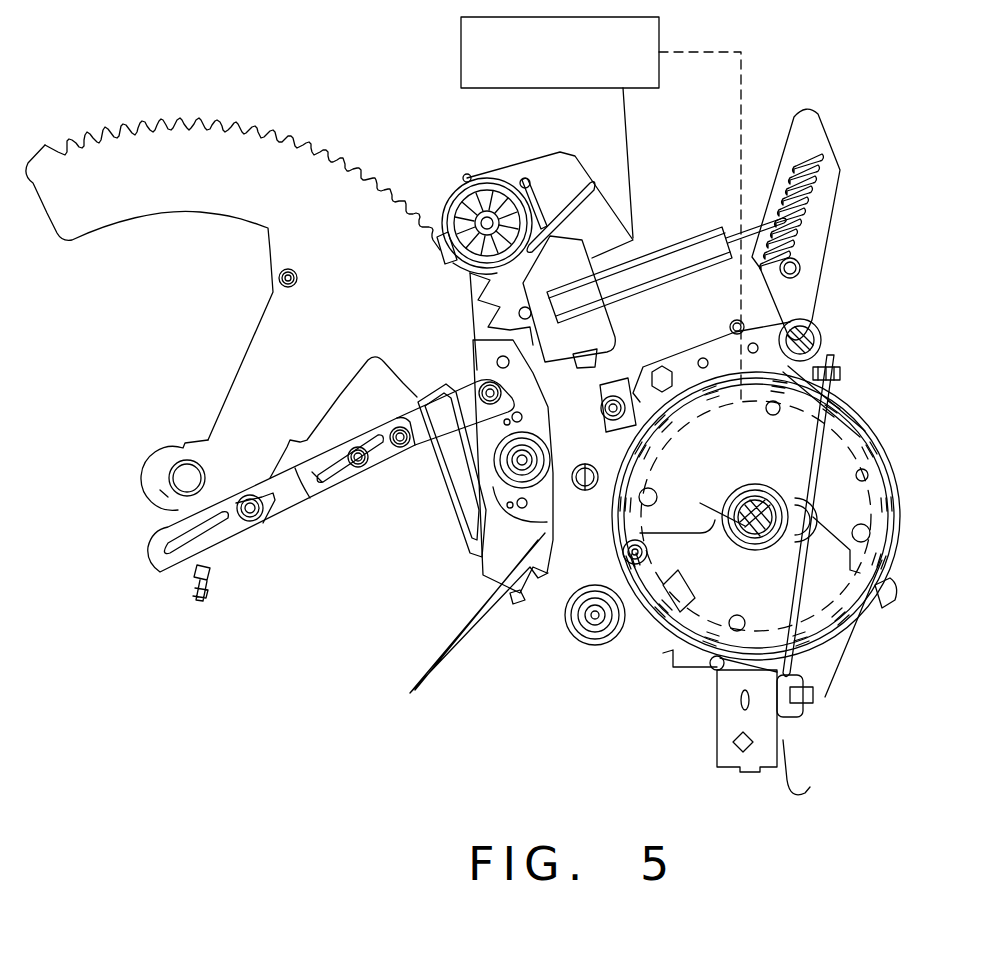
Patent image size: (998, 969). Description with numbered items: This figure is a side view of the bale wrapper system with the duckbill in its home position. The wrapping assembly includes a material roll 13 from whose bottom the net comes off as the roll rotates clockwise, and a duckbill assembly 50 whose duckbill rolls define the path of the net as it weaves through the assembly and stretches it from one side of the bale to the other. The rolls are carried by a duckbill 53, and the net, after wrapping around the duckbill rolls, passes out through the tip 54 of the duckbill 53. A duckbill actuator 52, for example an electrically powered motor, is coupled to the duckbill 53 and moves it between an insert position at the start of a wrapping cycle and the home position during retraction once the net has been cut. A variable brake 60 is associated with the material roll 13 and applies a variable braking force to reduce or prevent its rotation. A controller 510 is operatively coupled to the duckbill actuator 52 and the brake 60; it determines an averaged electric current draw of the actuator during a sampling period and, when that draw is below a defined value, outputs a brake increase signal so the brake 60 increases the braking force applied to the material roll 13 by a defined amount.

The controller 510 is at (601, 208).
The duckbill assembly 50 is at (232, 297).
The duckbill actuator 52 is at (570, 258).
The duckbill 53 is at (473, 613).
The tip 54 is at (422, 690).
The variable brake 60 is at (845, 444).
The material roll 13 is at (848, 513).